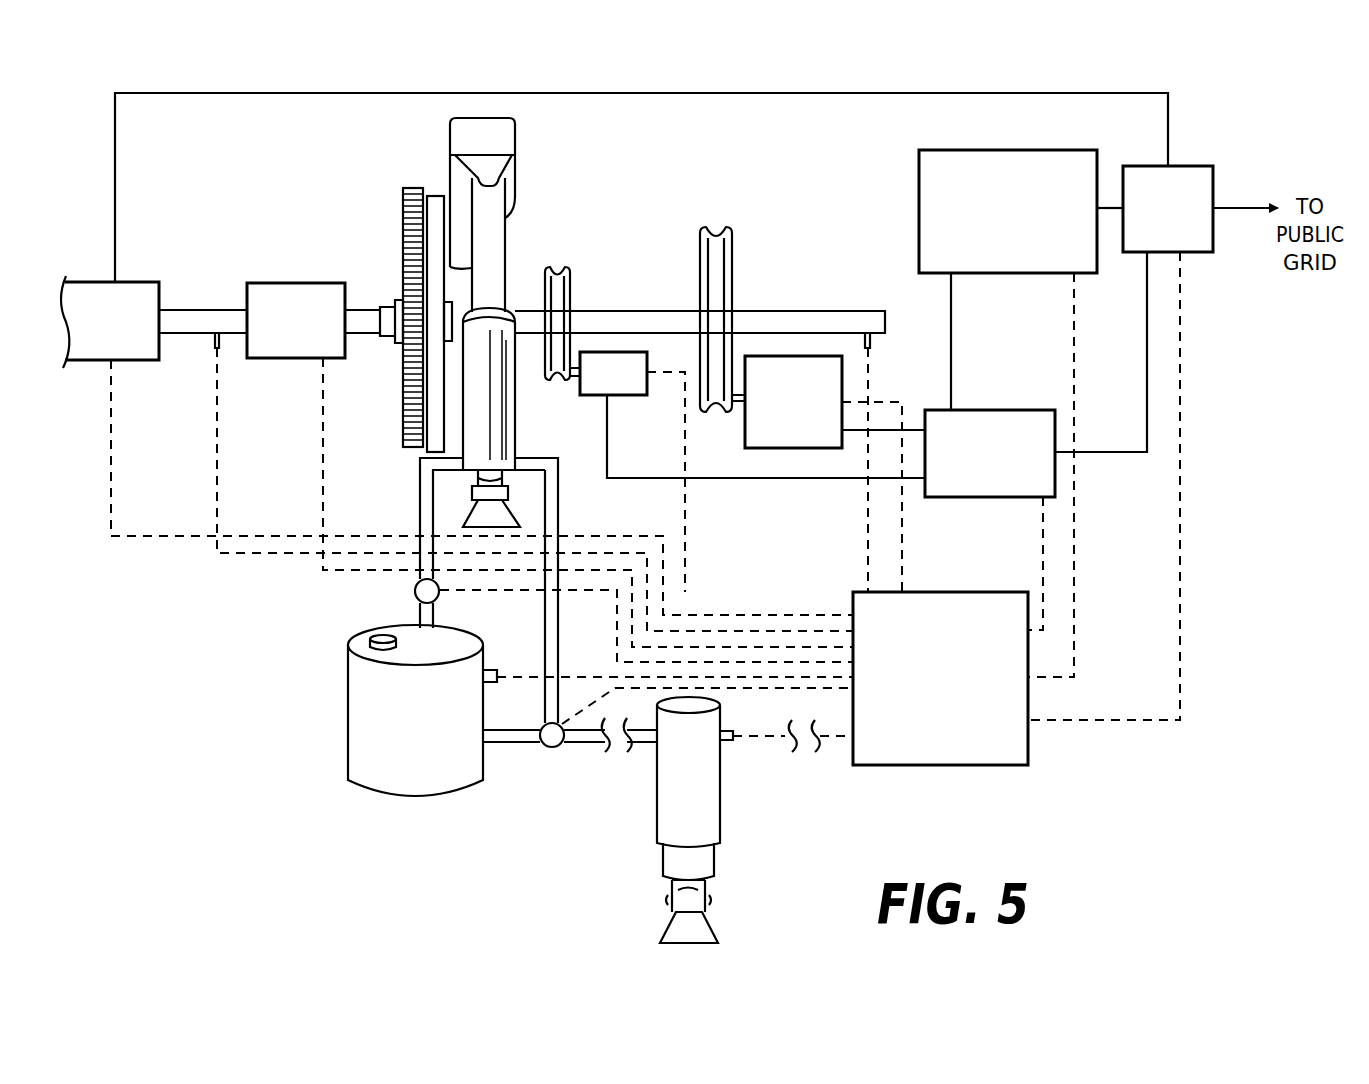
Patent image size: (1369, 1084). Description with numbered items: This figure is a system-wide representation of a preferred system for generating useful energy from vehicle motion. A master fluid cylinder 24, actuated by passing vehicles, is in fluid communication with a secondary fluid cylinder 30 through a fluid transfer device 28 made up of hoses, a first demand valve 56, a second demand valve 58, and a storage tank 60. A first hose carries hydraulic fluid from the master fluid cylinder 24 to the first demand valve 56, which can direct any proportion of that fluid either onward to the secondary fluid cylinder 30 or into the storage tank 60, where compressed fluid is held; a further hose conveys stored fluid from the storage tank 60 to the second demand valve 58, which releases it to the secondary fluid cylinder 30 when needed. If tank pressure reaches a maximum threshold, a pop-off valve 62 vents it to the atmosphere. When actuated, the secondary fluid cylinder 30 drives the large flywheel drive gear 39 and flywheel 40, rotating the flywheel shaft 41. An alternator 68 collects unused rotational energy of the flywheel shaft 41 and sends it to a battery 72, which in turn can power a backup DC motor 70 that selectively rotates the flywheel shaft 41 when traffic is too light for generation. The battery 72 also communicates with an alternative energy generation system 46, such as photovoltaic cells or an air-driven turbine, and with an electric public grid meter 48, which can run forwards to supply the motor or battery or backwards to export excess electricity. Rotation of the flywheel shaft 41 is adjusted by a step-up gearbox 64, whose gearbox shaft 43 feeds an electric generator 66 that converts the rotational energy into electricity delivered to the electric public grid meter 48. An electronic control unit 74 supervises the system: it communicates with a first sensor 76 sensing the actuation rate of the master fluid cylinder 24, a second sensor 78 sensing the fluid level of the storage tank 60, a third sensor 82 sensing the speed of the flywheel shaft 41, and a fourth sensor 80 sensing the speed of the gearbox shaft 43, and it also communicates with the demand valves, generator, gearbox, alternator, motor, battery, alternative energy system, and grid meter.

The master fluid cylinder 24 is at (722, 820).
The fluid transfer device 28 is at (595, 745).
The secondary fluid cylinder 30 is at (505, 247).
The large flywheel drive gear 39 is at (411, 188).
The flywheel 40 is at (435, 196).
The flywheel shaft 41 is at (793, 312).
The gearbox shaft 43 is at (195, 310).
The alternative energy generation system 46 is at (919, 208).
The electric public grid meter 48 is at (1195, 166).
The first demand valve 56 is at (550, 747).
The second demand valve 58 is at (415, 591).
The storage tank 60 is at (348, 735).
The pop-off valve 62 is at (372, 640).
The gearbox 64 is at (300, 283).
The electric generator 66 is at (83, 282).
The alternator 68 is at (618, 395).
The backup DC motor 70 is at (745, 432).
The battery 72 is at (990, 410).
The electronic control unit 74 is at (945, 765).
The first sensor 76 is at (730, 743).
The second sensor 78 is at (490, 670).
The fourth sensor 80 is at (217, 348).
The third sensor 82 is at (872, 340).